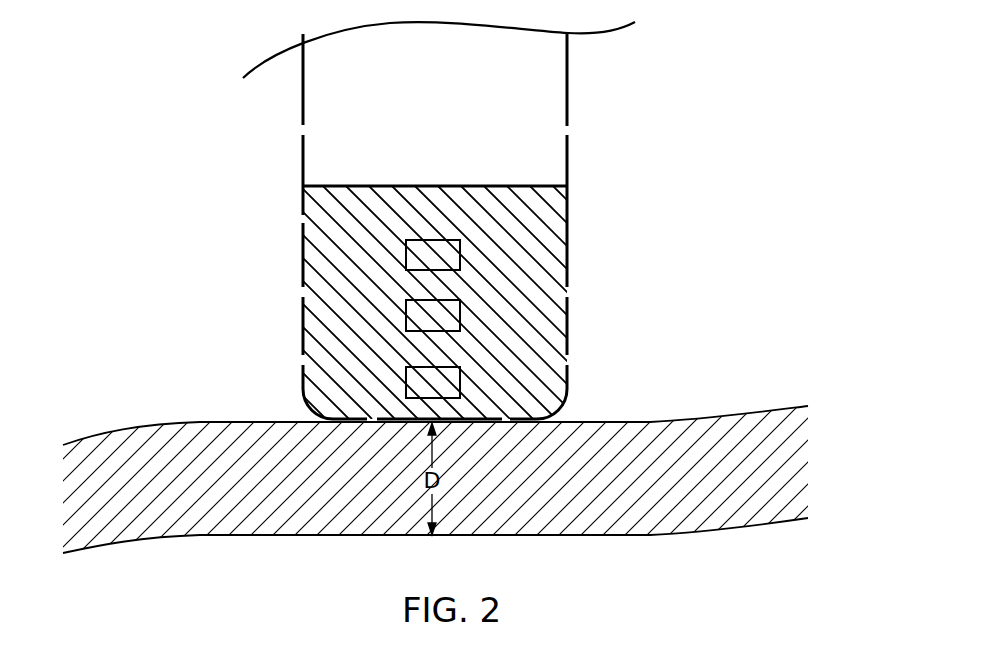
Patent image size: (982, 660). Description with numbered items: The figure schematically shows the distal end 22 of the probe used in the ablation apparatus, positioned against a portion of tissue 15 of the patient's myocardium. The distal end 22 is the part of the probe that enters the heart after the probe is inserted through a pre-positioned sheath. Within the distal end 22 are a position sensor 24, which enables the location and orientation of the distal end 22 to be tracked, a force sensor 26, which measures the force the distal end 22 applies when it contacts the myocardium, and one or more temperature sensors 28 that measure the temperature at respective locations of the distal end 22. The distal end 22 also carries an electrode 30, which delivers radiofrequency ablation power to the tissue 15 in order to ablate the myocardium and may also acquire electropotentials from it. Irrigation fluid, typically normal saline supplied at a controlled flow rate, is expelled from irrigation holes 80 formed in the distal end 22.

The tissue 15 is at (198, 422).
The distal end 22 is at (568, 90).
The position sensor 24 is at (460, 259).
The force sensor 26 is at (460, 317).
The temperature sensor 28 is at (460, 390).
The electrode 30 is at (318, 200).
The irrigation holes 80 is at (568, 126).